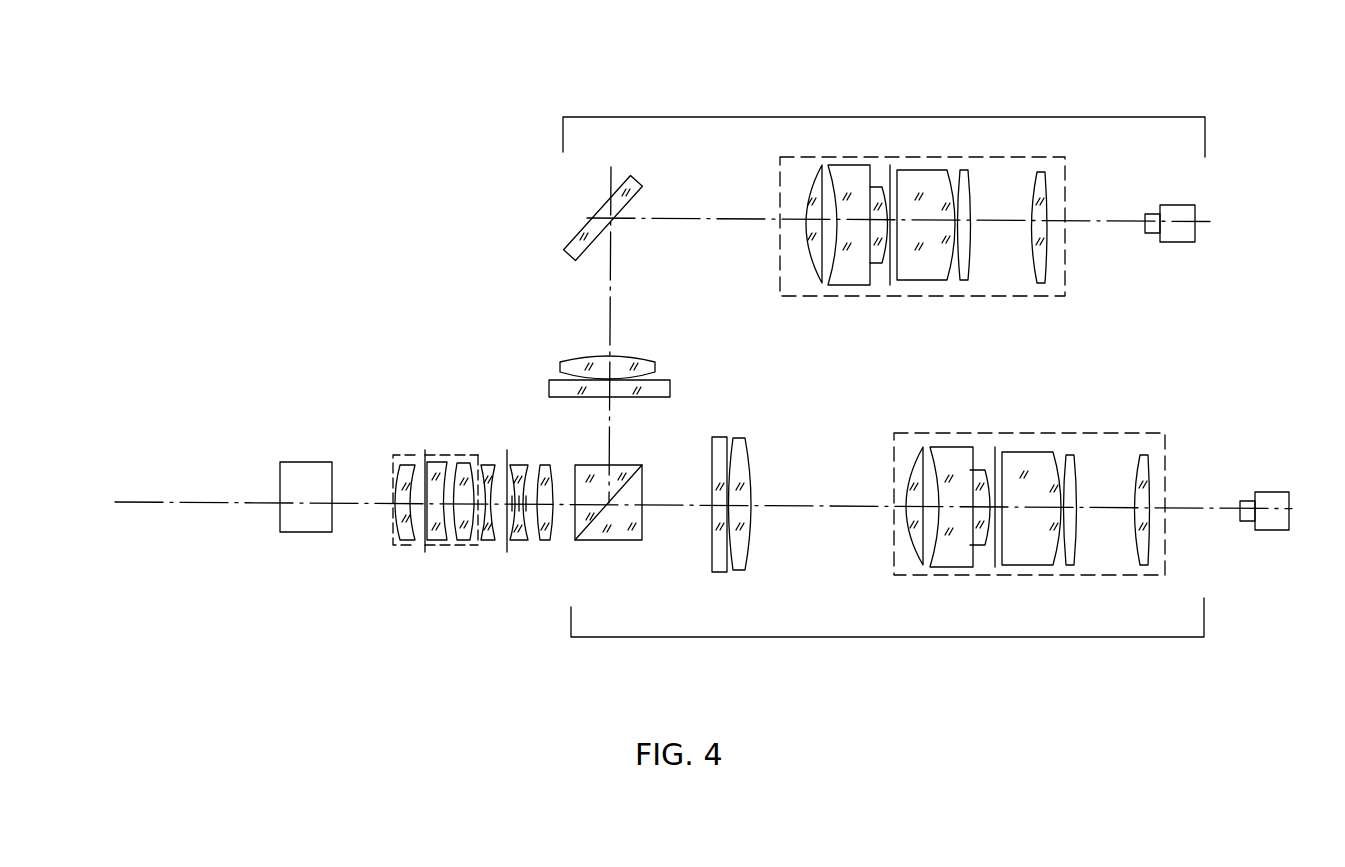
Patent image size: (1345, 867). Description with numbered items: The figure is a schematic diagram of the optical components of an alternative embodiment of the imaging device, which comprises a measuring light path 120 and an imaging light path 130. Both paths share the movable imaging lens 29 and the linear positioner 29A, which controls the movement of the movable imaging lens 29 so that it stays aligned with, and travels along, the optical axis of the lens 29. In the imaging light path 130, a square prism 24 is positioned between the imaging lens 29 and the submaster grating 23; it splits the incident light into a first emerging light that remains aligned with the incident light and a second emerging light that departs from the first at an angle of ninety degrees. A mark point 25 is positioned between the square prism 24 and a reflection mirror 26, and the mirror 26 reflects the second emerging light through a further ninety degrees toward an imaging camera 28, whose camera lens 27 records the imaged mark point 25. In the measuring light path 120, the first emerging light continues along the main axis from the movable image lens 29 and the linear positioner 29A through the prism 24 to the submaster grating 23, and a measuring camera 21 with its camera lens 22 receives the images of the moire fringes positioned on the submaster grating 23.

The linear positioner 29A is at (302, 462).
The movable imaging lens 29 is at (393, 450).
The square prism 24 is at (593, 487).
The mark point 25 is at (655, 373).
The reflection mirror 26 is at (587, 222).
The submaster grating 23 is at (717, 453).
The camera lens 27 is at (983, 173).
The imaging camera 28 is at (1185, 213).
The imaging light path 130 is at (884, 105).
The camera lens 22 is at (1128, 433).
The measuring camera 21 is at (1263, 487).
The measuring light path 120 is at (887, 643).